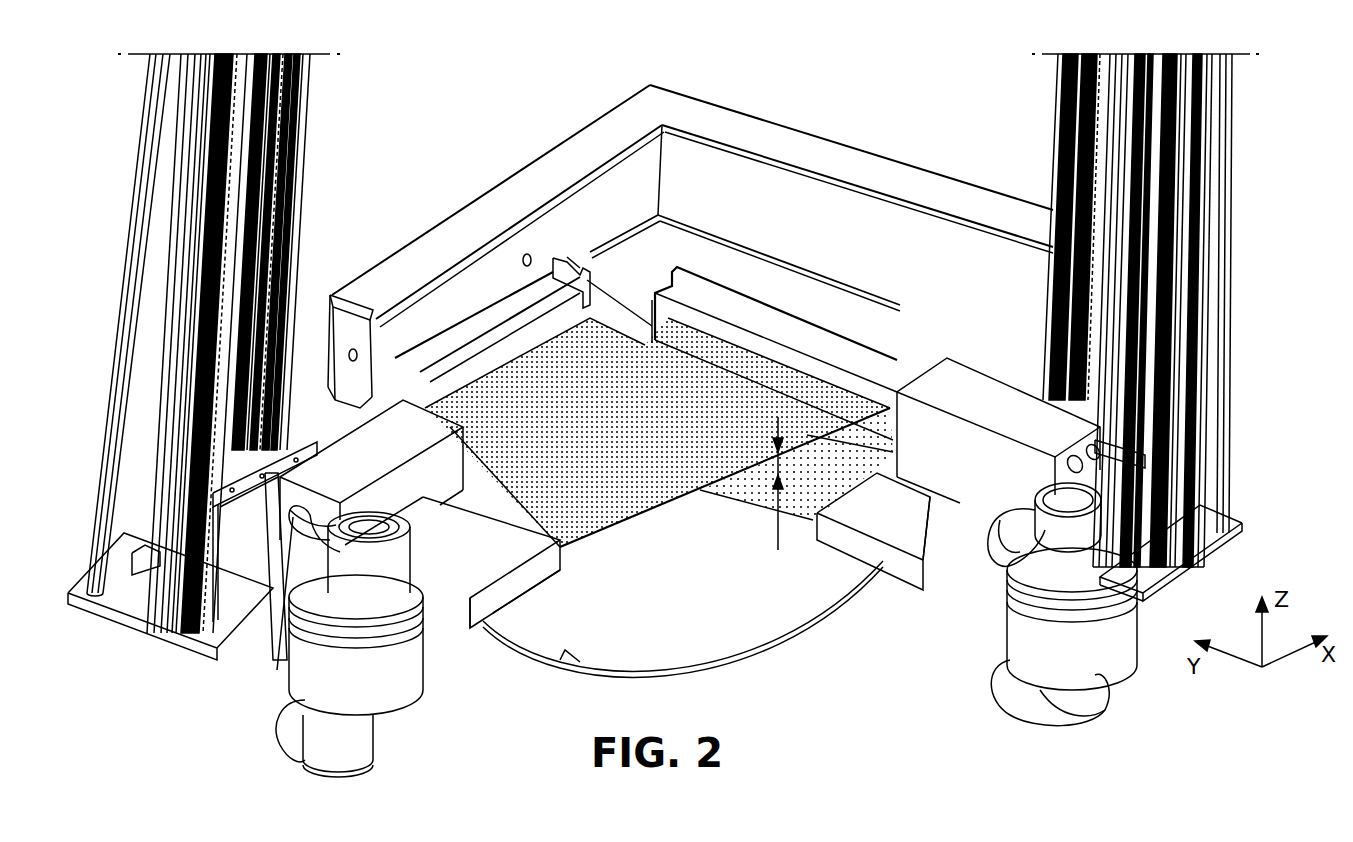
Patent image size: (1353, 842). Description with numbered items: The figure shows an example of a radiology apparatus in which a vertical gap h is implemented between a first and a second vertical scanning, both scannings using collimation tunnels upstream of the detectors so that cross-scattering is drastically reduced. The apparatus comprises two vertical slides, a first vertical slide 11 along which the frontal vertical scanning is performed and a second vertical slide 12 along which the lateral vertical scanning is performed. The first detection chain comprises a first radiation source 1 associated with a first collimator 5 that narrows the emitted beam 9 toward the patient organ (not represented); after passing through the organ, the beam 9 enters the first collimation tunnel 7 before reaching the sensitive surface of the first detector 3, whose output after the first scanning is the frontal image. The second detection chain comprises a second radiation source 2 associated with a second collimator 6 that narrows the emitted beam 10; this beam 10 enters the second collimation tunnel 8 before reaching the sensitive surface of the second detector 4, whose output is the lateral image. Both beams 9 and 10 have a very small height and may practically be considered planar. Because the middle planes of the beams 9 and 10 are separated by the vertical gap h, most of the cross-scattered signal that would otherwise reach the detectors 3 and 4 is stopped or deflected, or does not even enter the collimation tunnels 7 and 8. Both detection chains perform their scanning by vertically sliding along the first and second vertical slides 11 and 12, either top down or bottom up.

The first radiation source 1 is at (440, 660).
The second radiation source 2 is at (960, 600).
The first detector 3 is at (825, 325).
The second detector 4 is at (543, 253).
The first collimator 5 is at (503, 590).
The second collimator 6 is at (865, 545).
The first collimation tunnel 7 is at (754, 325).
The second collimation tunnel 8 is at (517, 313).
The beam 9 is at (842, 410).
The beam 10 is at (480, 392).
The first vertical slide 11 is at (308, 125).
The second vertical slide 12 is at (1055, 118).